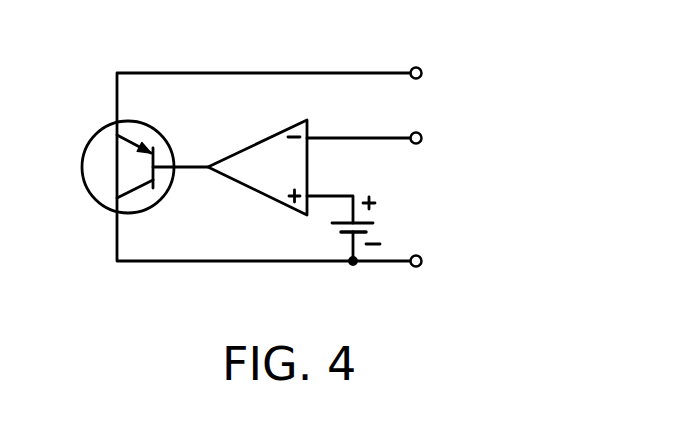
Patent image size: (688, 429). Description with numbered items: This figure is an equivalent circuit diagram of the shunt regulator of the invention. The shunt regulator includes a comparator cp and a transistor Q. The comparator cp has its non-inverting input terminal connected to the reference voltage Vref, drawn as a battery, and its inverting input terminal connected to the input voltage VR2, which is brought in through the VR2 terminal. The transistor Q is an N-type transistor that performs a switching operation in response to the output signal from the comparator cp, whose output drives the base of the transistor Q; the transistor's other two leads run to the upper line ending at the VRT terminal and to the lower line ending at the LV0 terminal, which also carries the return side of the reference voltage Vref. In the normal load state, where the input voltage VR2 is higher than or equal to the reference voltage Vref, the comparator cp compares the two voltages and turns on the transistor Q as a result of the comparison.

The N-type transistor Q is at (142, 184).
The comparator cp is at (257, 193).
The reference voltage Vref is at (388, 220).
The VRT terminal VRT is at (447, 74).
The input voltage VR2 is at (448, 139).
The LV0 terminal LV0 is at (445, 263).